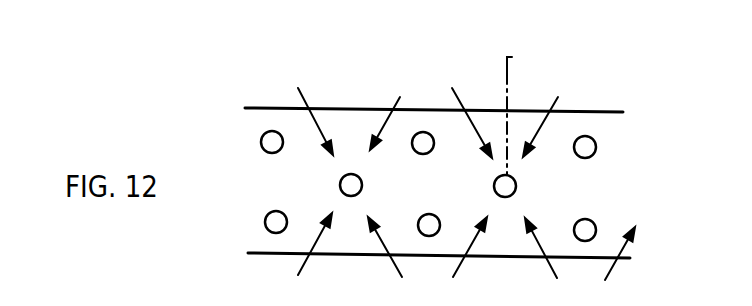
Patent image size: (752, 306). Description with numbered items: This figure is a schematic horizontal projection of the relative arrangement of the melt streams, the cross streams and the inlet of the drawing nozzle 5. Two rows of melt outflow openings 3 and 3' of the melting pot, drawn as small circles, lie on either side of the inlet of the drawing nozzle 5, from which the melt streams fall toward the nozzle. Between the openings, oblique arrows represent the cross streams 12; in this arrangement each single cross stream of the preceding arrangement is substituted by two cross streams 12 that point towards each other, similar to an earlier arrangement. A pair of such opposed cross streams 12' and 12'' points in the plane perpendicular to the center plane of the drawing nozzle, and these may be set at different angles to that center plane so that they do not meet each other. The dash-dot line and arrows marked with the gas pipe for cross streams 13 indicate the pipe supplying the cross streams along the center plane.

The melt outflow opening 3 is at (421, 254).
The melt outflow opening 3' is at (333, 111).
The inlet of the drawing nozzle 5 is at (613, 177).
The cross stream 12 is at (466, 182).
The cross stream 12' is at (473, 113).
The cross stream 12'' is at (555, 113).
The gas pipe for cross streams 13 is at (521, 57).